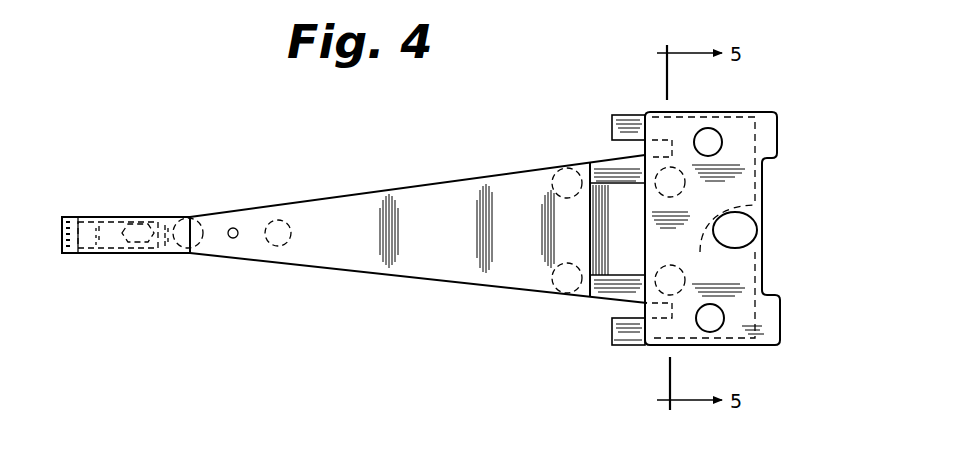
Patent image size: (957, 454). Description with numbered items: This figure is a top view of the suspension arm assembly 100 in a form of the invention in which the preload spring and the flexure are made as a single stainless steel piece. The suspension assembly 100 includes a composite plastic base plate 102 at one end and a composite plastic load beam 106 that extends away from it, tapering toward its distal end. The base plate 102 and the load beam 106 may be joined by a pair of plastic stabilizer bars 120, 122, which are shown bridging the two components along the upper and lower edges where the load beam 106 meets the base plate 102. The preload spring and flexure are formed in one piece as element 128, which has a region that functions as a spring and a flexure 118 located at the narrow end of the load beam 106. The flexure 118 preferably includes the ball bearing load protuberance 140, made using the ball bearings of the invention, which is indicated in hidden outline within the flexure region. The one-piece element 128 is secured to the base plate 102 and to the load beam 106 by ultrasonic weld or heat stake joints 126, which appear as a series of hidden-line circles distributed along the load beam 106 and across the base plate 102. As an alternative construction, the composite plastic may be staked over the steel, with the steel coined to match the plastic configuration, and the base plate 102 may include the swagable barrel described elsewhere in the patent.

The suspension assembly 100 is at (354, 243).
The composite plastic base plate 102 is at (778, 103).
The composite plastic load beam 106 is at (403, 183).
The flexure 118 is at (65, 208).
The plastic stabilizer bar 120 is at (598, 163).
The plastic stabilizer bar 122 is at (603, 293).
The ultrasonic weld or heat stake joints 126 is at (195, 247).
The one-piece preload spring and flexure element 128 is at (609, 337).
The ball bearing load protuberance 140 is at (150, 218).